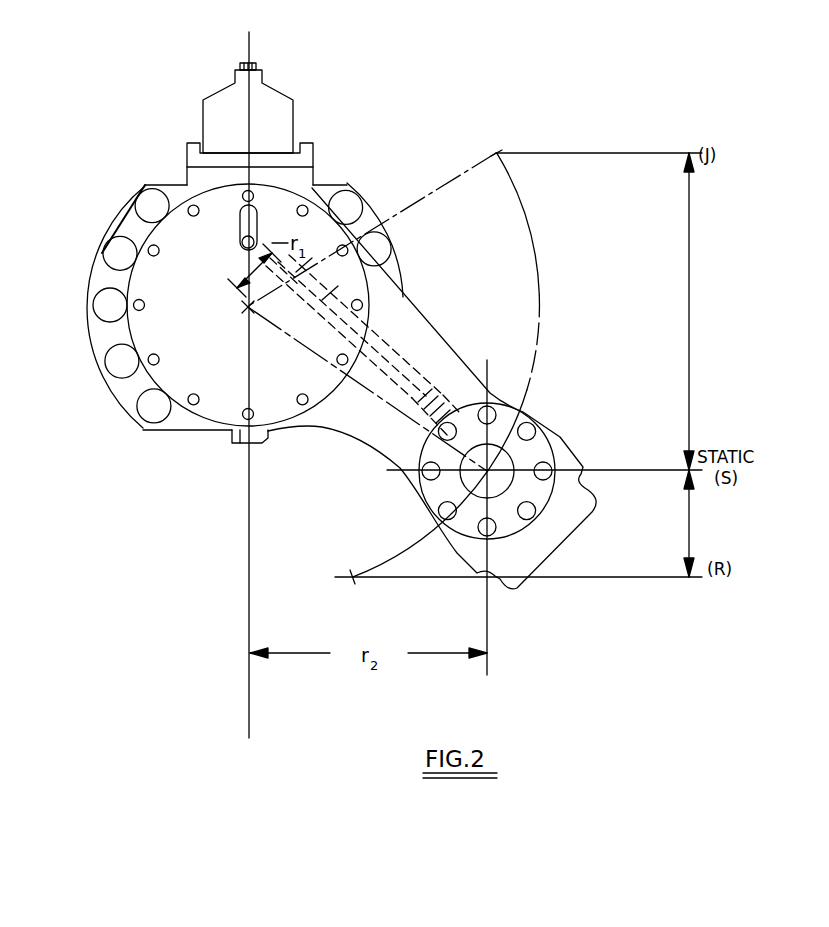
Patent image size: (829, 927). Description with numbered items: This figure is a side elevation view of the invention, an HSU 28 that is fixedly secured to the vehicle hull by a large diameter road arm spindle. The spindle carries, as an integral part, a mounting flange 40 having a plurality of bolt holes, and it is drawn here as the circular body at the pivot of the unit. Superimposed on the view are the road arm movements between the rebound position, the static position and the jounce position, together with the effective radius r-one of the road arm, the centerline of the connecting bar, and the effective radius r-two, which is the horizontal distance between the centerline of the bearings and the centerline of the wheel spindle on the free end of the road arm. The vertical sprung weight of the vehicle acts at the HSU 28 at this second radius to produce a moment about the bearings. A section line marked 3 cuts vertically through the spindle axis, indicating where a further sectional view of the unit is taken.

The section line 3- 3 is at (292, 32).
The HSU 28 is at (356, 178).
The mounting flange 40 is at (127, 222).